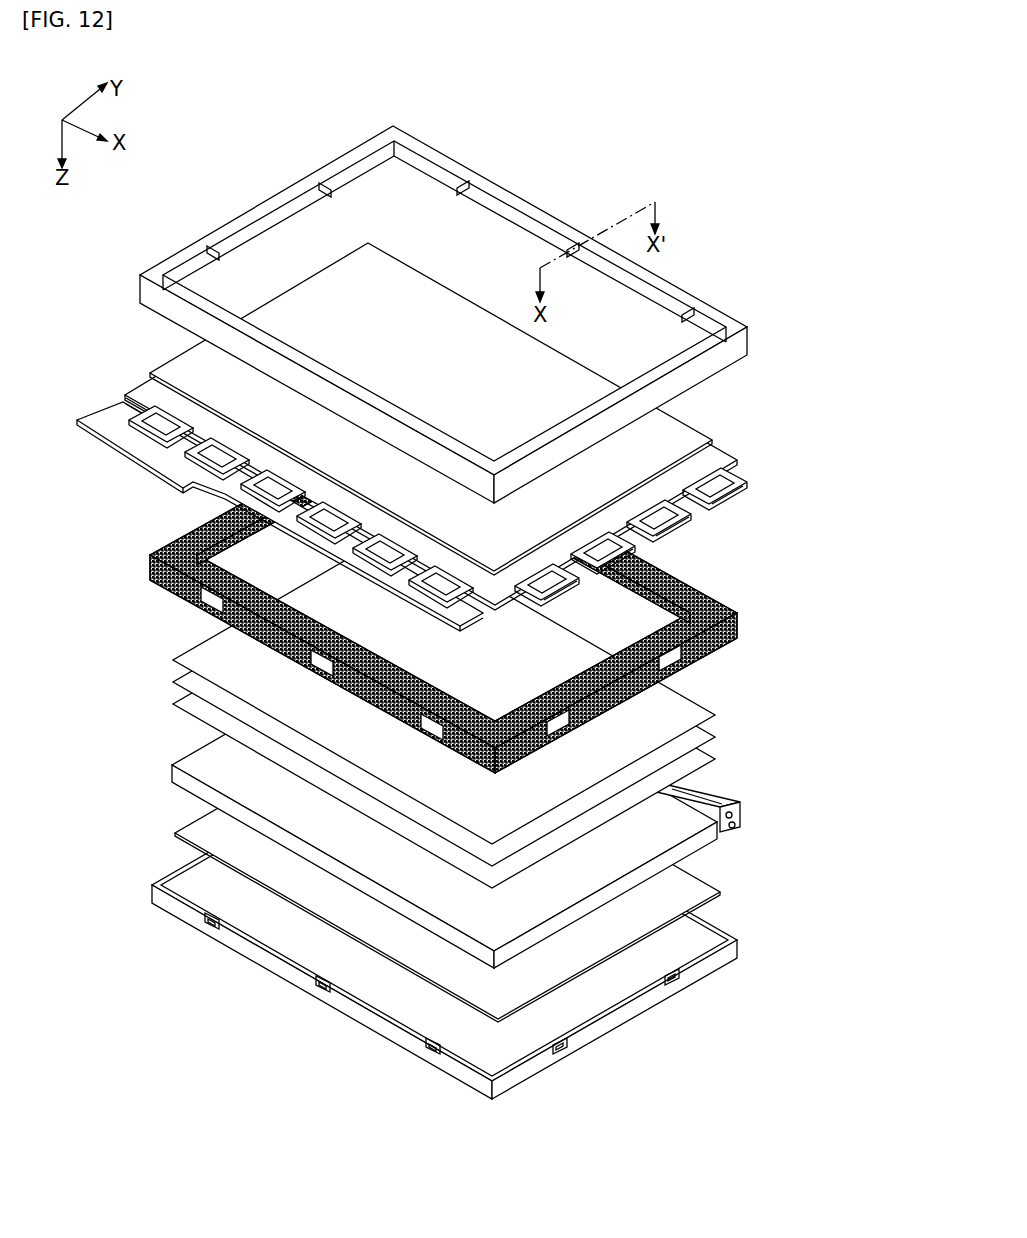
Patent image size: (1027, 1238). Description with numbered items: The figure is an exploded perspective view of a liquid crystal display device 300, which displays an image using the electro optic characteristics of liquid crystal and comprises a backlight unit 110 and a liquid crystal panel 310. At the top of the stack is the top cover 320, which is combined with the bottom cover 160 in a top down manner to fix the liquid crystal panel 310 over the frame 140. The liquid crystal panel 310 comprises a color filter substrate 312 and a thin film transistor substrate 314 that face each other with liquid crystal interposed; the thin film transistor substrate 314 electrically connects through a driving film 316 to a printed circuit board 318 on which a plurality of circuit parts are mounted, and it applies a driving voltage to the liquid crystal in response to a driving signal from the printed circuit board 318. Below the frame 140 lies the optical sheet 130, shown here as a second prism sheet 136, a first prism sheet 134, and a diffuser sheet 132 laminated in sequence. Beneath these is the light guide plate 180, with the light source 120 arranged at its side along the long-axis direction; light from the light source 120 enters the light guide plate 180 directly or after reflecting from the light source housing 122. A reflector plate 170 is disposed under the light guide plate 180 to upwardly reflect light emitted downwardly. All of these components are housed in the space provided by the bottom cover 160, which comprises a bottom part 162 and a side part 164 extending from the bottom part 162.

The liquid crystal display device 300 is at (631, 91).
The top cover 320 is at (745, 326).
The liquid crystal panel 310 is at (448, 437).
The color filter substrate 312 is at (677, 433).
The thin film transistor substrate 314 is at (718, 458).
The driving film 316 is at (130, 408).
The printed circuit board 318 is at (118, 432).
The frame 140 is at (738, 617).
The optical sheet 130 is at (380, 709).
The second prism sheet 136 is at (175, 661).
The first prism sheet 134 is at (175, 683).
The diffuser sheet 132 is at (175, 705).
The light guide plate 180 is at (171, 774).
The reflector plate 170 is at (174, 840).
The bottom cover 160 is at (449, 921).
The bottom part 162 is at (614, 990).
The side part 164 is at (618, 1017).
The light source 120 is at (742, 825).
The light source housing 122 is at (734, 805).
The backlight unit 110 is at (820, 595).